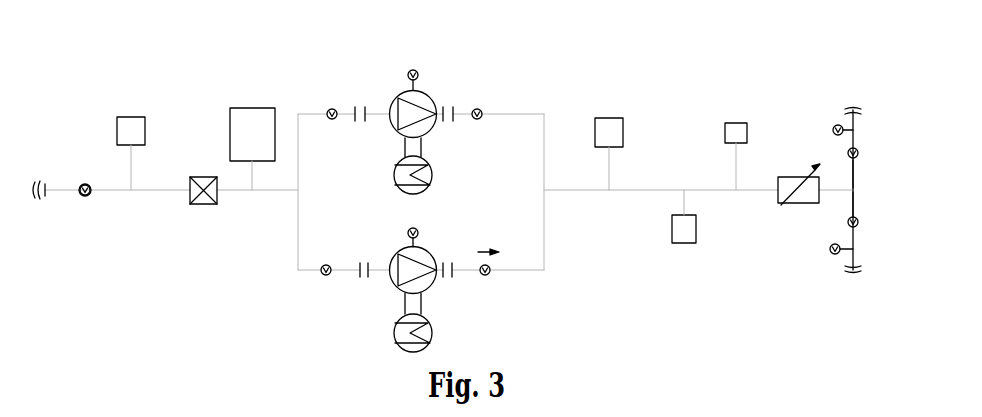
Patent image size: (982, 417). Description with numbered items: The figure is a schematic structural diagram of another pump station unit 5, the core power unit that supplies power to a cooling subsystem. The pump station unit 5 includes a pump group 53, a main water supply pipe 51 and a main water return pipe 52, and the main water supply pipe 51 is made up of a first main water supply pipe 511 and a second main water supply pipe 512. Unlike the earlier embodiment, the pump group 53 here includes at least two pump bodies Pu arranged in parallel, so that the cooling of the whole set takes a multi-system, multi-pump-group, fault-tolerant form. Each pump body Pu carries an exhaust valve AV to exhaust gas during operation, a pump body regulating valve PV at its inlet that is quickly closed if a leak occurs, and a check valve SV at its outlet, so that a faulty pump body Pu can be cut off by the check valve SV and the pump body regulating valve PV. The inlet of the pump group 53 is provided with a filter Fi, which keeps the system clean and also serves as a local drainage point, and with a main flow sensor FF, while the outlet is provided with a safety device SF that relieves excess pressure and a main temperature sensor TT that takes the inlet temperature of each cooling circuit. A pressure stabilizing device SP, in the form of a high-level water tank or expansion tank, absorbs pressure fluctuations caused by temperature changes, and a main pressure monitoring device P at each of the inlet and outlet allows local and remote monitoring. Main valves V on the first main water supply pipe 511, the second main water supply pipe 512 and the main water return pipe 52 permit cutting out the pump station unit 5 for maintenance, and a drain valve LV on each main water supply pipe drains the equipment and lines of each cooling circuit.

The pump station unit 5 is at (421, 23).
The main water supply pipe 51 is at (838, 188).
The first main water supply pipe 511 is at (853, 180).
The second main water supply pipe 512 is at (853, 200).
The main water return pipe 52 is at (52, 192).
The pump group 53 is at (519, 107).
The main valve V is at (80, 185).
The main pressure monitoring device P is at (132, 177).
The pressure stabilizing device SP is at (232, 123).
The filter Fi is at (200, 203).
The pump body Pu is at (435, 100).
The exhaust valve AV is at (409, 71).
The pump body regulating valve PV is at (322, 274).
The check valve SV is at (489, 275).
The main temperature sensor TT is at (733, 168).
The safety device SF is at (675, 243).
The main flow sensor FF is at (778, 203).
The drain valve LV is at (833, 127).